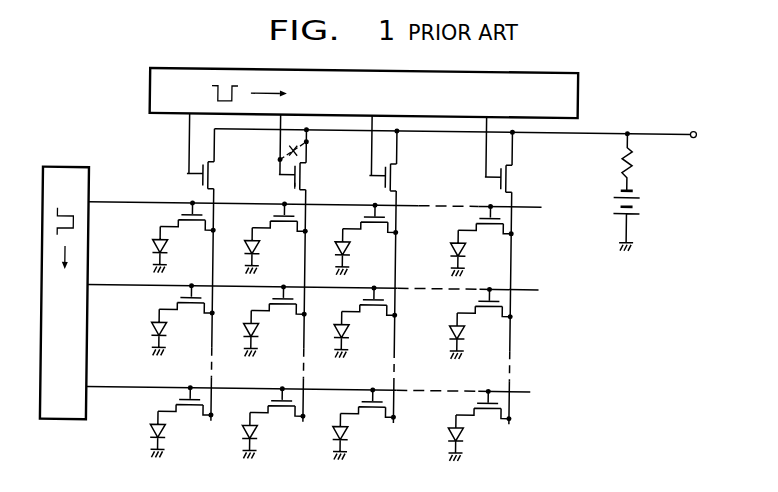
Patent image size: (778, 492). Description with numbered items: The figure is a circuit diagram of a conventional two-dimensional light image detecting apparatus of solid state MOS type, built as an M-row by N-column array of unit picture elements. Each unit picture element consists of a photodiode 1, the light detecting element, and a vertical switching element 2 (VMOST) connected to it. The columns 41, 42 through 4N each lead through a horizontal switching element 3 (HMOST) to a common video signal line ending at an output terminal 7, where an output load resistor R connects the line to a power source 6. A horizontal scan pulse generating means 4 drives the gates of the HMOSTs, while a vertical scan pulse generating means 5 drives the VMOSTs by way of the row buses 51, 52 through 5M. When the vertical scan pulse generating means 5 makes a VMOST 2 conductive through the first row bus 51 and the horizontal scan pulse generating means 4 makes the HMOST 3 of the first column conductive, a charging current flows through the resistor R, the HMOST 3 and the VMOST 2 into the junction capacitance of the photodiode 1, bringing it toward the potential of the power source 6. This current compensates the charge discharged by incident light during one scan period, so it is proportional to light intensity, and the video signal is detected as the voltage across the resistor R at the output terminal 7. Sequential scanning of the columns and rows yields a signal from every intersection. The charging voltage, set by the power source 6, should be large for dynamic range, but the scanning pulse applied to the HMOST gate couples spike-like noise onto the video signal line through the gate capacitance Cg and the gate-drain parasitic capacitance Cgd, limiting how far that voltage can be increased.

The photodiode 1 is at (147, 249).
The vertical switching element 2 is at (193, 227).
The horizontal switching element 3 is at (208, 174).
The horizontal scan pulse generating means 4 is at (576, 83).
The vertical scan pulse generating means 5 is at (72, 171).
The power source 6 is at (637, 203).
The output terminal 7 is at (695, 131).
The first column 41 is at (205, 203).
The second column 42 is at (298, 202).
The Nth column 4N is at (507, 201).
The first row bus 51 is at (541, 206).
The second row 52 is at (545, 276).
The Mth row 5M is at (532, 390).
The output load resistor R is at (631, 155).
The gate capacitance Cg is at (299, 189).
The gate-drain parasitic capacitance Cgd is at (303, 151).